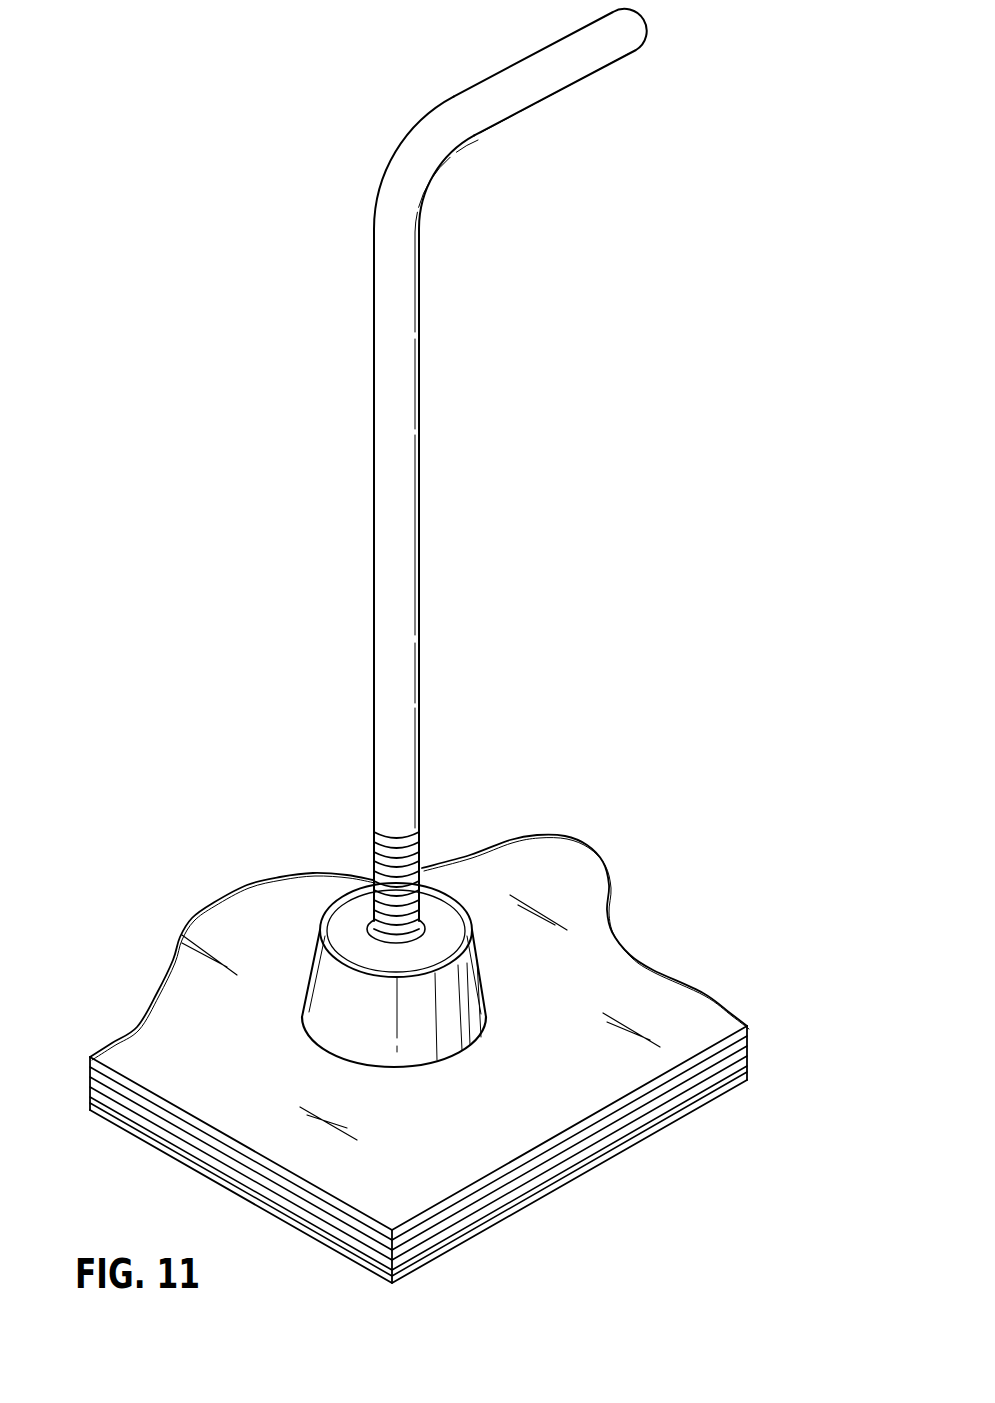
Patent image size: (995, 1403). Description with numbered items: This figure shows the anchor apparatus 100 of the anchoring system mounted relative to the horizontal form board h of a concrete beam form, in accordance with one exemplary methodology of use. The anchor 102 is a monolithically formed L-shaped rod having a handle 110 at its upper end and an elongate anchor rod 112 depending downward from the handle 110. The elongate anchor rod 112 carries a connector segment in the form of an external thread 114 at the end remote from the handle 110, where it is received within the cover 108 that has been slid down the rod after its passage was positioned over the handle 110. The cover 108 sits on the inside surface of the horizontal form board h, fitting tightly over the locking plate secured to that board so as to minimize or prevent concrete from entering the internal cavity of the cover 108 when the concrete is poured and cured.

The anchor apparatus 100 is at (293, 600).
The anchor 102 is at (442, 412).
The cover 108 is at (480, 973).
The handle 110 is at (557, 80).
The elongate anchor rod 112 is at (407, 355).
The external thread 114 is at (412, 852).
The horizontal form board h is at (647, 985).